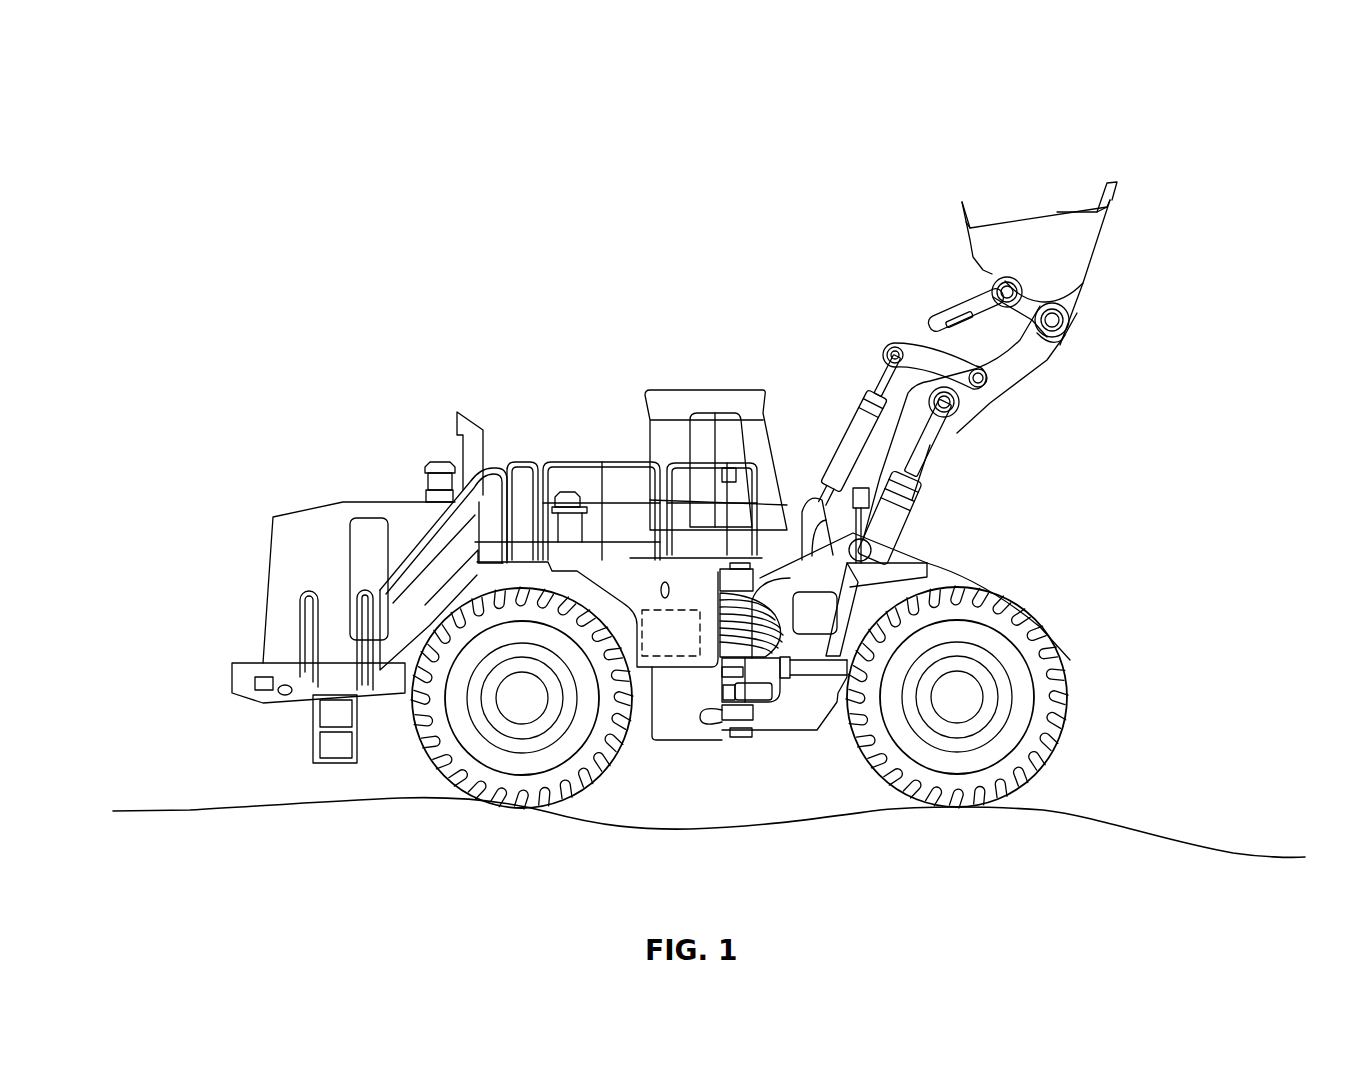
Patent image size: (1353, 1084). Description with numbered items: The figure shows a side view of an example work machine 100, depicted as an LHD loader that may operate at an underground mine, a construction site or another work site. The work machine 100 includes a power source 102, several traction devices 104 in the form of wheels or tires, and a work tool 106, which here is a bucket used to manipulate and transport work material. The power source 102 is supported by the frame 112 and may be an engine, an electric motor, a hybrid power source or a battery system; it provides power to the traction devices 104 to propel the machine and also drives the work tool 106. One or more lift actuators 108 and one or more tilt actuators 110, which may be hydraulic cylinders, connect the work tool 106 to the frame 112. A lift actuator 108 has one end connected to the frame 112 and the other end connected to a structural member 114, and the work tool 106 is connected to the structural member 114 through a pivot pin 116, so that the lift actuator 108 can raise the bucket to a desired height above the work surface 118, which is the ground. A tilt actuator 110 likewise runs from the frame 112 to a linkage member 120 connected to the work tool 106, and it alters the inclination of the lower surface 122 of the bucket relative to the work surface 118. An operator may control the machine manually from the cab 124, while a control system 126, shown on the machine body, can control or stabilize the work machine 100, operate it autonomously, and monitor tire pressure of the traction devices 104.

The work machine 100 is at (212, 70).
The power source 102 is at (333, 569).
The traction devices 104 is at (545, 812).
The work tool 106 is at (1015, 215).
The lift actuator 108 is at (920, 487).
The tilt actuator 110 is at (848, 418).
The frame 112 is at (952, 573).
The structural member 114 is at (1040, 367).
The pivot pin 116 is at (1072, 322).
The work surface 118 is at (1128, 830).
The linkage member 120 is at (933, 323).
The lower surface 122 is at (1100, 255).
The cab 124 is at (700, 386).
The control system 126 is at (691, 644).